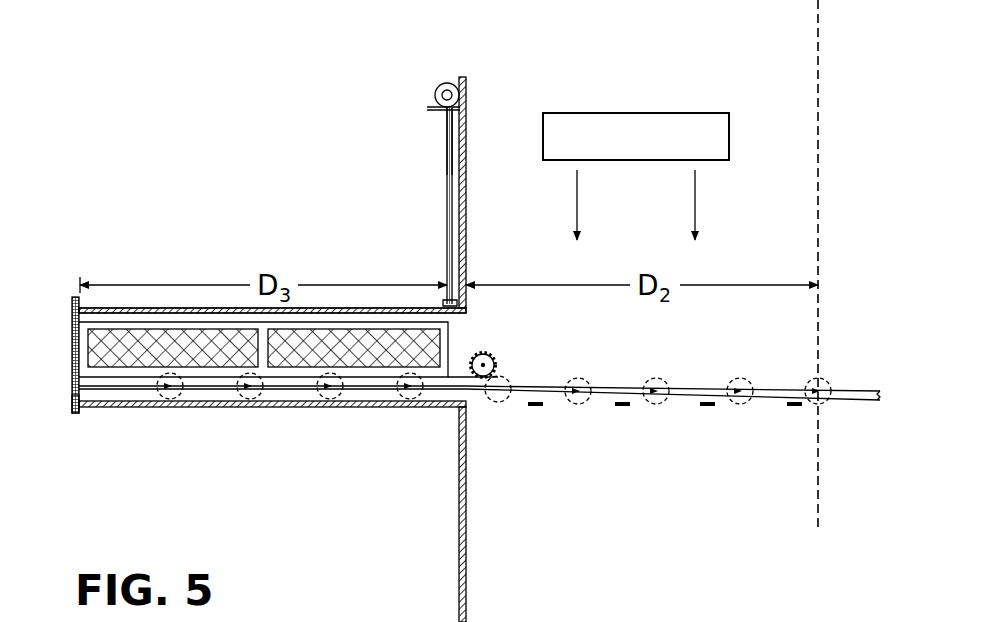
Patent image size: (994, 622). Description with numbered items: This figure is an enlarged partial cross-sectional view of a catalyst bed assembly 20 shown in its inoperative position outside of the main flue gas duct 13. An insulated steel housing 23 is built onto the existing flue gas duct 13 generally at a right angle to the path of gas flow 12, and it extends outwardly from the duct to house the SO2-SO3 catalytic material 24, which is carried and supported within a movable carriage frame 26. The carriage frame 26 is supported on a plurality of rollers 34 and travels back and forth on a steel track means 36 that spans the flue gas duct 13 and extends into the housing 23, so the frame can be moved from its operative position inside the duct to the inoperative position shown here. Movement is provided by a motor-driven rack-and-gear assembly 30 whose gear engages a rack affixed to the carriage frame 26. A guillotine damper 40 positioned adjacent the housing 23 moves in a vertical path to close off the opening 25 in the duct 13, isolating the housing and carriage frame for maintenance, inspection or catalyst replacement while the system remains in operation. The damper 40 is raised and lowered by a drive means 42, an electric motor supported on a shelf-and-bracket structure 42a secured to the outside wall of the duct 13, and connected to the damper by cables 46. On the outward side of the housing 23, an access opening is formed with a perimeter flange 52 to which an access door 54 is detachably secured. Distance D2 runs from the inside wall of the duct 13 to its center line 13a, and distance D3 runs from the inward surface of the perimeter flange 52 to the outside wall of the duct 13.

The gas flow 12 is at (730, 128).
The flue gas duct 13 is at (467, 108).
The center line 13a is at (820, 116).
The assembly 20 is at (196, 224).
The housing 23 is at (160, 407).
The catalytic material 24 is at (292, 355).
The opening 25 is at (471, 330).
The carriage frame 26 is at (108, 318).
The rack-and-gear assembly 30 is at (506, 367).
The rollers 34 is at (263, 407).
The track means 36 is at (496, 396).
The guillotine damper 40 is at (447, 220).
The drive means 42 is at (447, 83).
The shelf-and-bracket structure 42a is at (428, 107).
The cables 46 is at (447, 145).
The perimeter flange 52 is at (79, 414).
The access door 54 is at (72, 362).